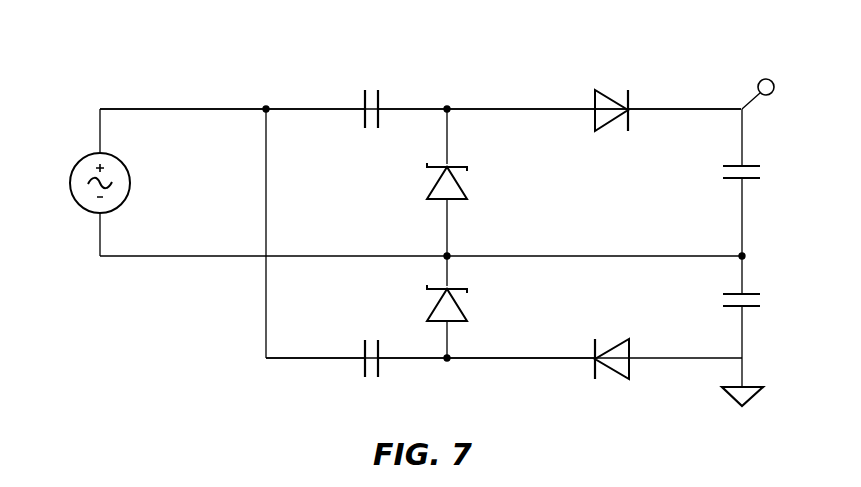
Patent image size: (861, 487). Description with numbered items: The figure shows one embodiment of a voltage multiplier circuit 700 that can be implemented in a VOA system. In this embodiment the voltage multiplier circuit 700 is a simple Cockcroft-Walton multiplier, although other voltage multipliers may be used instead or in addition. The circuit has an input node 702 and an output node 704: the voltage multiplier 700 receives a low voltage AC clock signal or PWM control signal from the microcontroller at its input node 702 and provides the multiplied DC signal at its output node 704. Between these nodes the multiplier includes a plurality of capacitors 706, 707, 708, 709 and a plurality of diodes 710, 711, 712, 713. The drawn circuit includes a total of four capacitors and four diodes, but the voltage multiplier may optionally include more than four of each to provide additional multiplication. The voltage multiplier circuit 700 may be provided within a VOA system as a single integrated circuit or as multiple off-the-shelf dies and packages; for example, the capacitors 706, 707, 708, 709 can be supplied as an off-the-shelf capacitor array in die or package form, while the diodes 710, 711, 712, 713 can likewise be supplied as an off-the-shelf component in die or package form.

The voltage multiplier circuit 700 is at (174, 70).
The input node 702 is at (71, 182).
The output node 704 is at (772, 79).
The capacitor 706 is at (381, 103).
The capacitor 707 is at (752, 161).
The capacitor 708 is at (752, 291).
The capacitor 709 is at (383, 365).
The diode 710 is at (460, 178).
The diode 711 is at (612, 100).
The diode 712 is at (610, 349).
The diode 713 is at (460, 303).